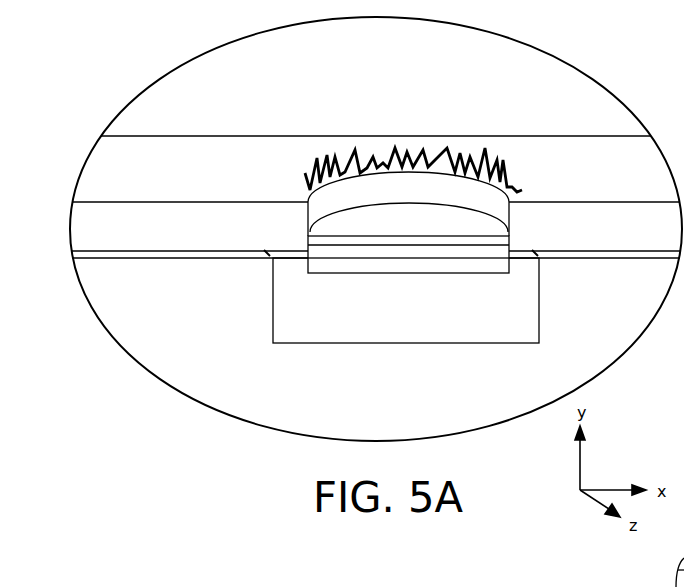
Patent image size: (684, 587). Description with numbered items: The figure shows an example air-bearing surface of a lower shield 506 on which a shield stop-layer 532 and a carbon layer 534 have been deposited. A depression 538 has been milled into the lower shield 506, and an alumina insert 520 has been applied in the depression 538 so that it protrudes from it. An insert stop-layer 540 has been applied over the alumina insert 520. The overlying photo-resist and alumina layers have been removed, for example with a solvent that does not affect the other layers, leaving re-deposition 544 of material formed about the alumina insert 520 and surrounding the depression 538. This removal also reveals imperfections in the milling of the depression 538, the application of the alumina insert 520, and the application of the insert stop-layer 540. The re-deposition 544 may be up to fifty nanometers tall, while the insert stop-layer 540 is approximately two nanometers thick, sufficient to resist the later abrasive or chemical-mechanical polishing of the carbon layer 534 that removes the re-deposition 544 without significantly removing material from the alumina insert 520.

The lower shield 506 is at (433, 318).
The alumina insert 520 is at (437, 272).
The shield stop-layer 532 is at (553, 259).
The carbon layer 534 is at (233, 236).
The depression 538 is at (369, 252).
The insert stop-layer 540 is at (453, 237).
The re-deposition 544 is at (508, 200).